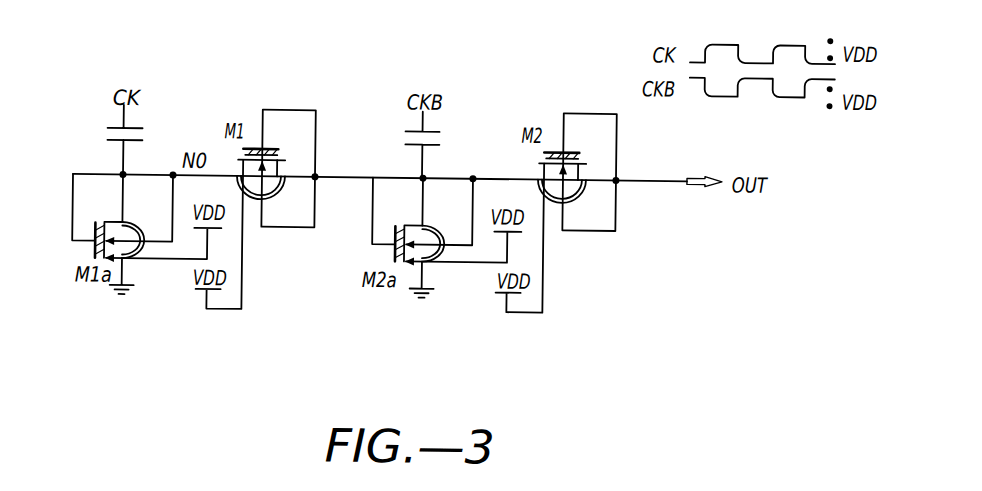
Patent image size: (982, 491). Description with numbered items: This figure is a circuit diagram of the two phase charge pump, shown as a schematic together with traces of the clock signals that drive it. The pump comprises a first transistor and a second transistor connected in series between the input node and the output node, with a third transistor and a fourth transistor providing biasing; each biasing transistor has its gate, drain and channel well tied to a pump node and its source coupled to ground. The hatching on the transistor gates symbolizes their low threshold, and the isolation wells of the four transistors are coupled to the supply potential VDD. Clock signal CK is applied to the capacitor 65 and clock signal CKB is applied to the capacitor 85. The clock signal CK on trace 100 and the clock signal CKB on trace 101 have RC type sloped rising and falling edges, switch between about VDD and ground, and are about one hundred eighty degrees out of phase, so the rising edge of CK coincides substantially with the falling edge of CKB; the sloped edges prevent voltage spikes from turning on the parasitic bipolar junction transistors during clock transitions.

The capacitor 65 is at (117, 128).
The capacitor 85 is at (438, 126).
The trace 100 is at (717, 38).
The trace 101 is at (717, 89).